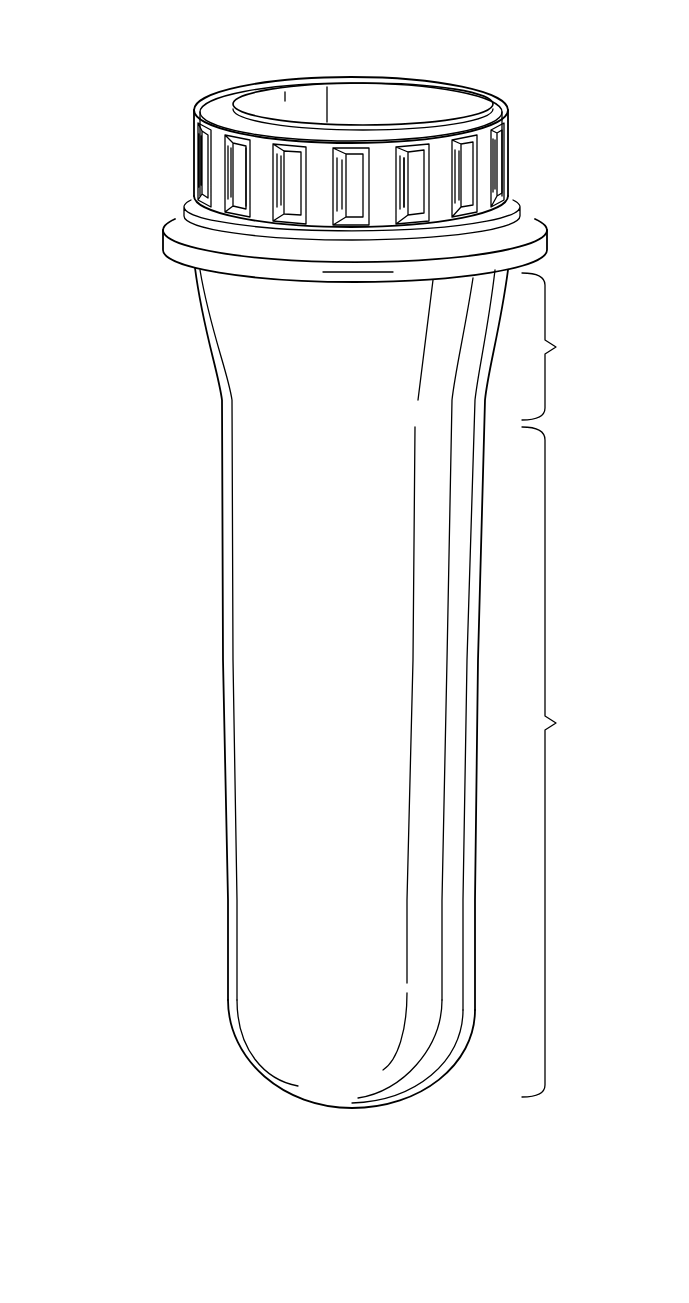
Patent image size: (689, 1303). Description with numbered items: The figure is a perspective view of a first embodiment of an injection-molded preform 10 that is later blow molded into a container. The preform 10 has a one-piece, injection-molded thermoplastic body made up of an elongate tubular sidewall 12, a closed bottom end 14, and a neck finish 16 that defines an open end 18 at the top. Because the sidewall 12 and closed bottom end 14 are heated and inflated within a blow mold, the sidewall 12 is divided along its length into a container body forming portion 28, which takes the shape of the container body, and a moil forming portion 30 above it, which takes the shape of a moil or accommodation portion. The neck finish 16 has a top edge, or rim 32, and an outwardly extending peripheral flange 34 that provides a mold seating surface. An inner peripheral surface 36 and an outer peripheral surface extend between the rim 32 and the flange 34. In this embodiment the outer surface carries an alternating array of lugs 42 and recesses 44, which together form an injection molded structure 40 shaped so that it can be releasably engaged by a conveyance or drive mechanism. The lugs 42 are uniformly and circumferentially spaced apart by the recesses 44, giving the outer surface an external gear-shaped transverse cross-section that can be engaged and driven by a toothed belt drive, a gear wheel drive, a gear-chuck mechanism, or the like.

The preform 10 is at (158, 540).
The elongate tubular sidewall 12 is at (242, 697).
The closed bottom end 14 is at (290, 1060).
The neck finish 16 is at (512, 130).
The open end 18 is at (337, 82).
The container body forming portion 28 is at (572, 762).
The moil forming portion 30 is at (570, 346).
The top edge, or rim 32 is at (490, 103).
The outwardly extending peripheral flange 34 is at (533, 228).
The inner peripheral surface 36 is at (290, 97).
The injection molded structure 40 is at (160, 150).
The lugs 42 is at (215, 157).
The recesses 44 is at (247, 173).